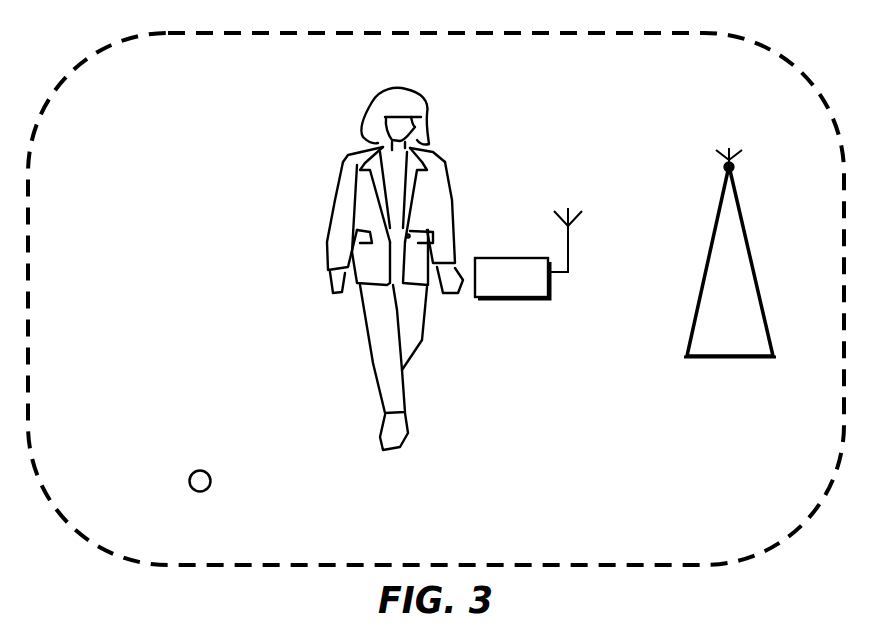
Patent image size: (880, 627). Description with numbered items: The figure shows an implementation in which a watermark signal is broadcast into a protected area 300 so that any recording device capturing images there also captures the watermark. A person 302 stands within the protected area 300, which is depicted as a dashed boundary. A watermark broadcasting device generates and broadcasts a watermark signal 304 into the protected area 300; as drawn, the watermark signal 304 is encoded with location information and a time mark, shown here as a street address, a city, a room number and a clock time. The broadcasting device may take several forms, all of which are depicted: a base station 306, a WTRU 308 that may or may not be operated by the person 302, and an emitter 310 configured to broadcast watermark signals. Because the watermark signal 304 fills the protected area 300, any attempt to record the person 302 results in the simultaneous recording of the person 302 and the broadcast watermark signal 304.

The protected area 300 is at (754, 47).
The person 302 is at (382, 102).
The watermark signal 304 is at (126, 135).
The base station 306 is at (708, 360).
The WTRU 308 is at (528, 300).
The emitter 310 is at (210, 485).